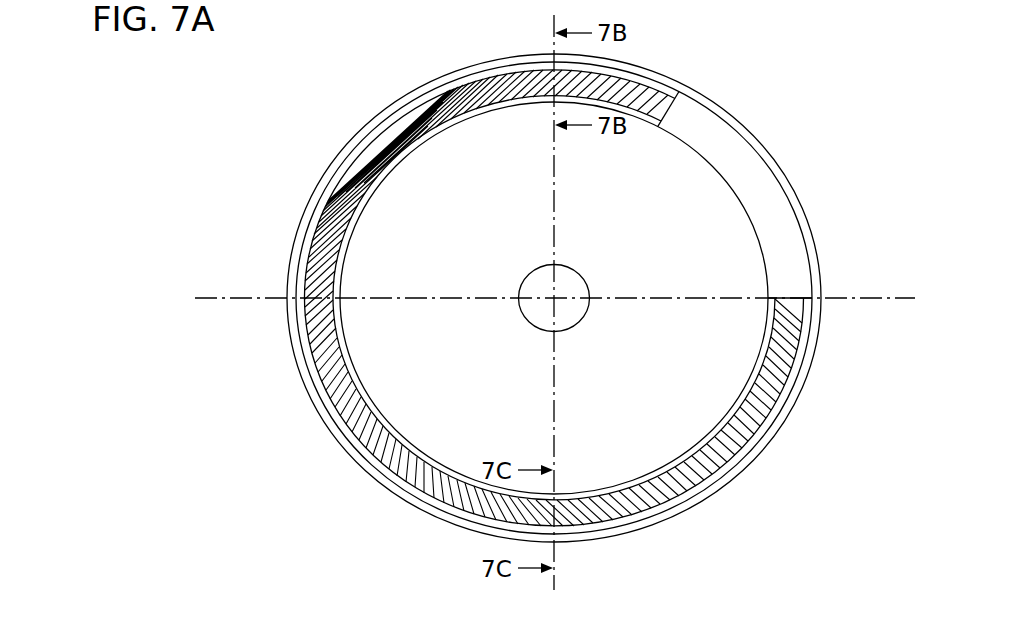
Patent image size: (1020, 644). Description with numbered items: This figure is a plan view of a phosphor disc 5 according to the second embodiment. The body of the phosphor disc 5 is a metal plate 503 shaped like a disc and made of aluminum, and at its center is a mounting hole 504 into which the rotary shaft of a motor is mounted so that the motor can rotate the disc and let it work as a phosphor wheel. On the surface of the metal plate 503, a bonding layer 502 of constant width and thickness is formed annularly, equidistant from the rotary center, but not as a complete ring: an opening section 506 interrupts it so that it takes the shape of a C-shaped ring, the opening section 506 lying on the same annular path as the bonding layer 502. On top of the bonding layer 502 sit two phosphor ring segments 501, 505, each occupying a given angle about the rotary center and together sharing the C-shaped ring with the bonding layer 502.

The phosphor disc 5 is at (766, 69).
The phosphor ring segment 501 is at (322, 252).
The bonding layer 502 is at (778, 402).
The metal plate 503 is at (745, 475).
The mounting hole 504 is at (527, 277).
The phosphor ring segment 505 is at (637, 513).
The opening section 506 is at (752, 190).